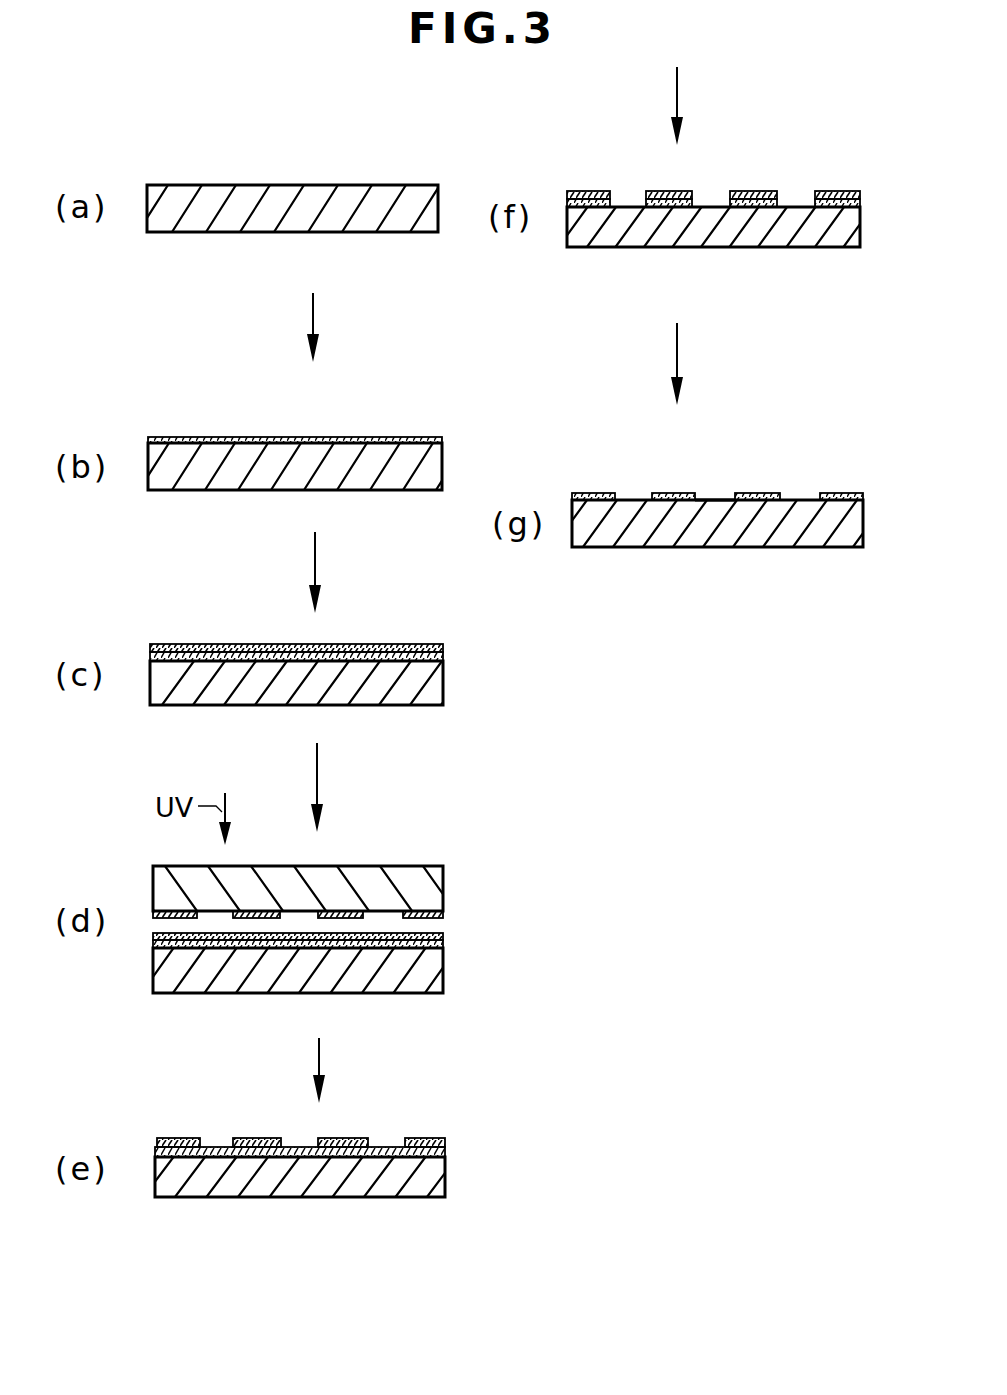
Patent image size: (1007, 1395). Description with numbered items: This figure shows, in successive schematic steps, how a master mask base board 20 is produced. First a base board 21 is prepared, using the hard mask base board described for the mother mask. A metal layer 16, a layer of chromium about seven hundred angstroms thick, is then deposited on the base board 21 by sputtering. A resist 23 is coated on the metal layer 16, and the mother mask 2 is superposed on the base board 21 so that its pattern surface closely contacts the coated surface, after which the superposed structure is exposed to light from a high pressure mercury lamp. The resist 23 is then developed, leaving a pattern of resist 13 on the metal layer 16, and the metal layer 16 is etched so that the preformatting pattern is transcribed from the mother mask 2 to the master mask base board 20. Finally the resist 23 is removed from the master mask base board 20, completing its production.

The mother mask 2 is at (275, 866).
The resist 13 is at (245, 644).
The metal layer 16 is at (343, 437).
The master mask base board 20 is at (712, 495).
The base board 21 is at (290, 200).
The resist 23 is at (433, 927).